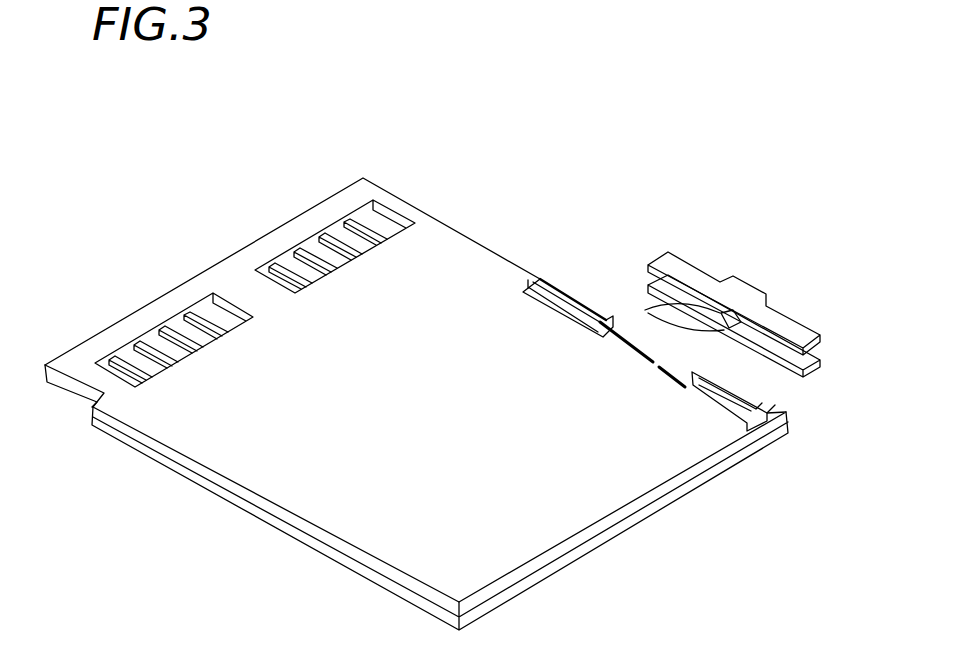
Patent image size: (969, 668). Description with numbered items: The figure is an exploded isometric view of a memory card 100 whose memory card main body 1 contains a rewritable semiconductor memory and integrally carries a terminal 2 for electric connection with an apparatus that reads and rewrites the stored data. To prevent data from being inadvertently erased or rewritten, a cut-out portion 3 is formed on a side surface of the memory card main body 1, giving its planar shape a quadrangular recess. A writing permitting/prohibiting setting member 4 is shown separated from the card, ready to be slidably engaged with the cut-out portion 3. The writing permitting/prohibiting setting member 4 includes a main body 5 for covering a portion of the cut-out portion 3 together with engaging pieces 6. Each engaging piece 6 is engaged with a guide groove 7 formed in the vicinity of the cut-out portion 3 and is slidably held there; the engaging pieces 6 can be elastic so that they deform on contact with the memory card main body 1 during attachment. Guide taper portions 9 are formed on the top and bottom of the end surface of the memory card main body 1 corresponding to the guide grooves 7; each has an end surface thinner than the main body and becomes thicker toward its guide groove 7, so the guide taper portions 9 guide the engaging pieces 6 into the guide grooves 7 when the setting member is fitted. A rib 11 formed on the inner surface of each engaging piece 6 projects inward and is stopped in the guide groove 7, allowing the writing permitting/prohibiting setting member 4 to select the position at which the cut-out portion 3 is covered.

The memory card 100 is at (515, 74).
The memory card main body 1 is at (637, 470).
The terminal 2 is at (350, 237).
The cut-out portion 3 is at (663, 365).
The writing permitting/prohibiting setting member 4 is at (897, 284).
The main body 5 is at (758, 290).
The engaging pieces 6 is at (790, 330).
The guide groove 7 is at (563, 315).
The guide taper portions 9 is at (578, 302).
The rib 11 is at (720, 313).